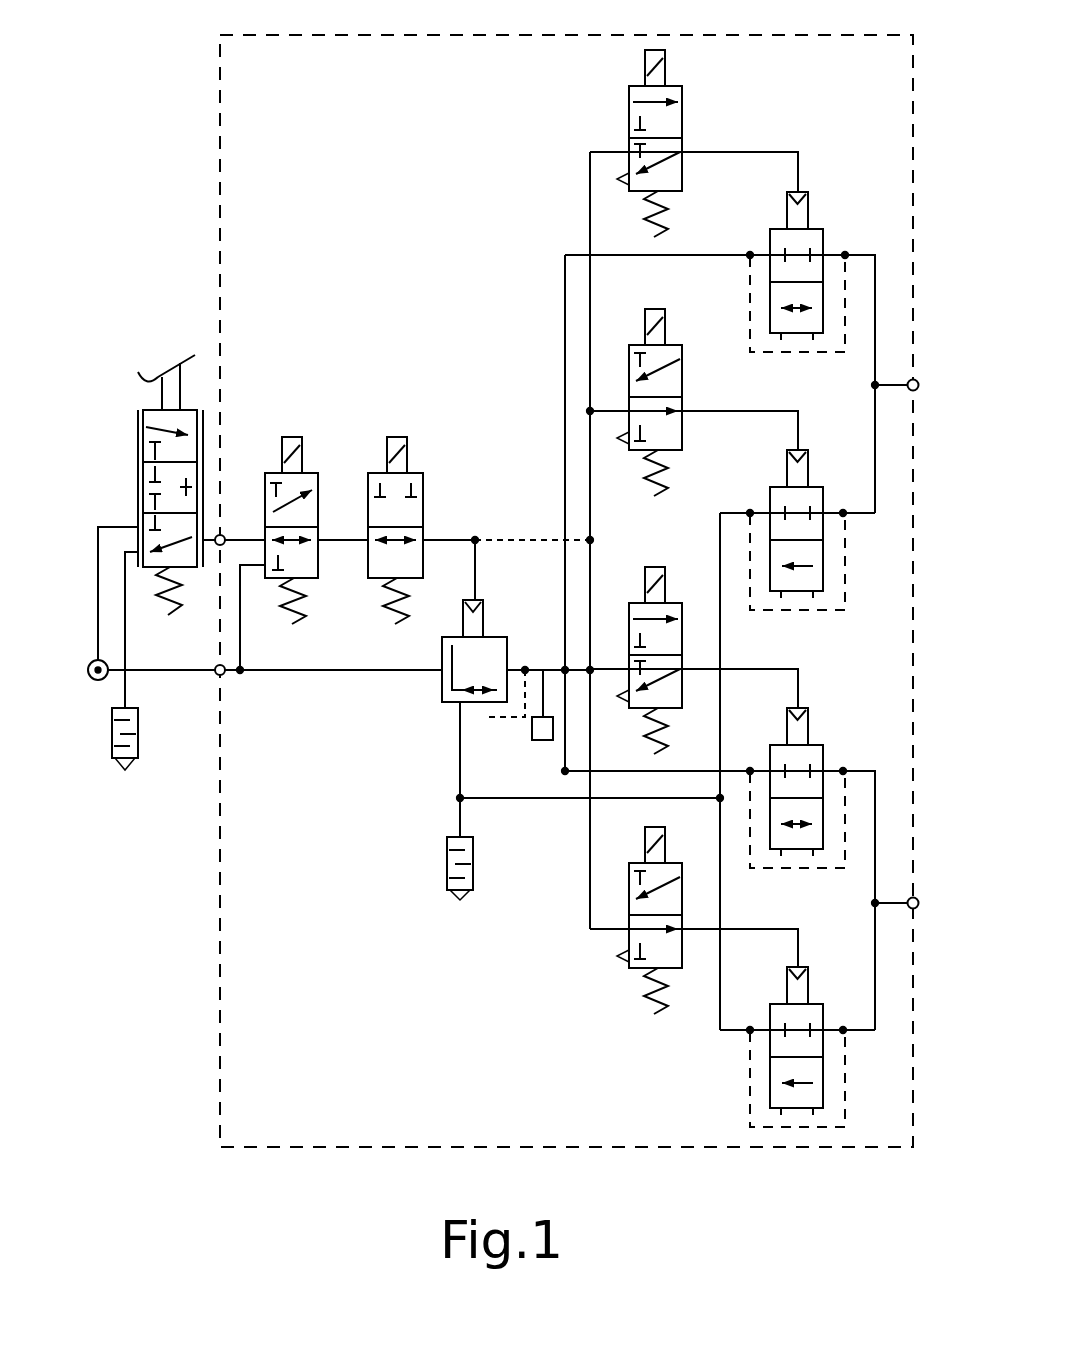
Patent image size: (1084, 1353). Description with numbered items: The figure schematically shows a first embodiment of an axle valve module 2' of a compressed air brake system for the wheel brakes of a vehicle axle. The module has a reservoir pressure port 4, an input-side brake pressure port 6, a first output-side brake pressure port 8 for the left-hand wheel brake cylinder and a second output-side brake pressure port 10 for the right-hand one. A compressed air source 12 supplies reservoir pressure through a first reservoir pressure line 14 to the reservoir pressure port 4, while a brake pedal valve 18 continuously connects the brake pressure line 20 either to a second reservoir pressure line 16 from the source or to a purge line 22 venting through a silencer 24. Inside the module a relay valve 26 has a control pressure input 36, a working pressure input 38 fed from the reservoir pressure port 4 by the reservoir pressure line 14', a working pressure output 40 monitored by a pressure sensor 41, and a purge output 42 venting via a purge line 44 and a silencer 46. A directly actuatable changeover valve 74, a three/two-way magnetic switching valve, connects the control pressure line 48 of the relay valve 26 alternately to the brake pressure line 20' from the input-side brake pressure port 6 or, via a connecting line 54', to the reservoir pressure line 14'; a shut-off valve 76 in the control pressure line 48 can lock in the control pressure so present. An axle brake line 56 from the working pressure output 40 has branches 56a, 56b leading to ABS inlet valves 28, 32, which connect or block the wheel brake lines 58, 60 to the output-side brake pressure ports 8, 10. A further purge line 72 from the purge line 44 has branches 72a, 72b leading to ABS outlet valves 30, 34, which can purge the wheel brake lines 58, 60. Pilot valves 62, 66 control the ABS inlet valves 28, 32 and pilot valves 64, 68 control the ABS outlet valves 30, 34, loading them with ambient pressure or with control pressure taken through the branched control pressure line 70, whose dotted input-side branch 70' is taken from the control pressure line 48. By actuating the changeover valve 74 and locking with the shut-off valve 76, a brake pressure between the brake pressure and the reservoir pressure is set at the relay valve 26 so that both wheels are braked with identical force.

The axle valve module 2' is at (513, 591).
The reservoir pressure port 4 is at (223, 677).
The input-side brake pressure port 6 is at (219, 547).
The first output-side brake pressure port 8 is at (911, 380).
The second output-side brake pressure port 10 is at (911, 898).
The compressed air source 12 is at (98, 684).
The first reservoir pressure line 14 is at (164, 725).
The reservoir pressure line 14' is at (409, 724).
The second reservoir pressure line 16 is at (114, 525).
The brake pedal valve 18 is at (128, 440).
The brake pressure line 20 is at (234, 474).
The brake pressure line 20' is at (247, 509).
The purge line 22 is at (127, 632).
The silencer 24 is at (138, 745).
The relay valve 26 is at (498, 635).
The ABS inlet valve 28 is at (745, 281).
The ABS outlet valve 30 is at (745, 541).
The ABS inlet valve 32 is at (838, 758).
The ABS outlet valve 34 is at (745, 1057).
The control pressure input 36 is at (461, 621).
The working pressure input 38 is at (432, 690).
The working pressure output 40 is at (513, 718).
The pressure sensor 41 is at (543, 741).
The purge output 42 is at (444, 760).
The purge line 44 is at (457, 815).
The silencer 46 is at (447, 870).
The control pressure line 48 is at (448, 538).
The connecting line 54' is at (296, 617).
The axle brake line 56 is at (549, 665).
The branch of the axle brake line 56a is at (562, 256).
The branch of the axle brake line 56b is at (561, 777).
The wheel brake line 58 is at (889, 395).
The wheel brake line 60 is at (911, 906).
The pilot valve 62 is at (700, 135).
The pilot valve 64 is at (700, 397).
The pilot valve 66 is at (700, 655).
The pilot valve 68 is at (700, 912).
The control pressure line 70 is at (607, 540).
The control pressure line 70' is at (534, 496).
The purge line 72 is at (565, 800).
The branch of the purge line 72a is at (718, 522).
The branch of the purge line 72b is at (718, 1013).
The changeover valve 74 is at (292, 425).
The shut-off valve 76 is at (397, 425).